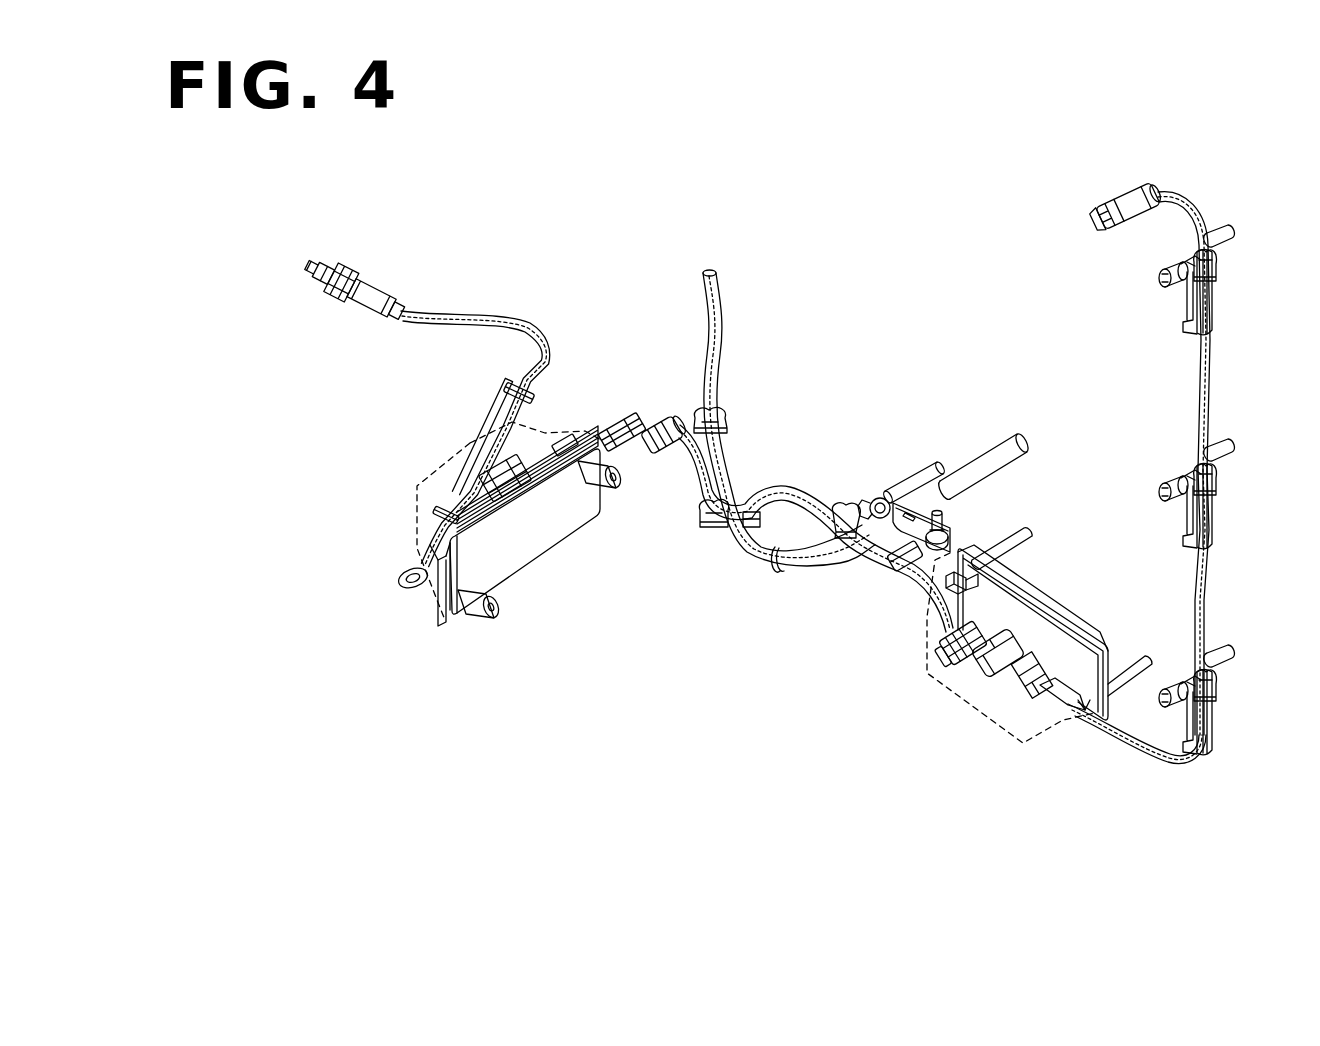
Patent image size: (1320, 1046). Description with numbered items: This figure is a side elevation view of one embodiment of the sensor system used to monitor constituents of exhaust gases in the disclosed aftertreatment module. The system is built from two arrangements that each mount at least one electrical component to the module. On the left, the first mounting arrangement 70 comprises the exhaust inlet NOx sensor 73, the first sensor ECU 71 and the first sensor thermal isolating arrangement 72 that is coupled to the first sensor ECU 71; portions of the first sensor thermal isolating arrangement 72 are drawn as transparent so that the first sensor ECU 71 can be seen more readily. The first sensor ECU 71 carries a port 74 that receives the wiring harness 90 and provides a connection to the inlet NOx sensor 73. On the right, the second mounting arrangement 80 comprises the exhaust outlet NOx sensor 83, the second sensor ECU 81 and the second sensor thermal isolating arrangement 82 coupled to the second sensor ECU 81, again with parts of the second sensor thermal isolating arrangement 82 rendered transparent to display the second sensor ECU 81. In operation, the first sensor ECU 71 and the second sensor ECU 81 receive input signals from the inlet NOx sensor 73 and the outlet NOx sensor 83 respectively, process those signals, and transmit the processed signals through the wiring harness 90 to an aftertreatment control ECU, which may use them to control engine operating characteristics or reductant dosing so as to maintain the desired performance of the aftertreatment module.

The first mounting arrangement 70 is at (355, 487).
The first sensor electronic control unit 71 is at (553, 445).
The first sensor thermal isolating arrangement 72 is at (438, 625).
The exhaust inlet NOx sensor 73 is at (376, 292).
The port 74 is at (520, 448).
The second mounting arrangement 80 is at (1000, 770).
The second sensor ECU 81 is at (1008, 632).
The second sensor thermal isolating arrangement 82 is at (1117, 645).
The exhaust outlet NOx sensor 83 is at (1105, 210).
The wiring harness 90 is at (968, 457).